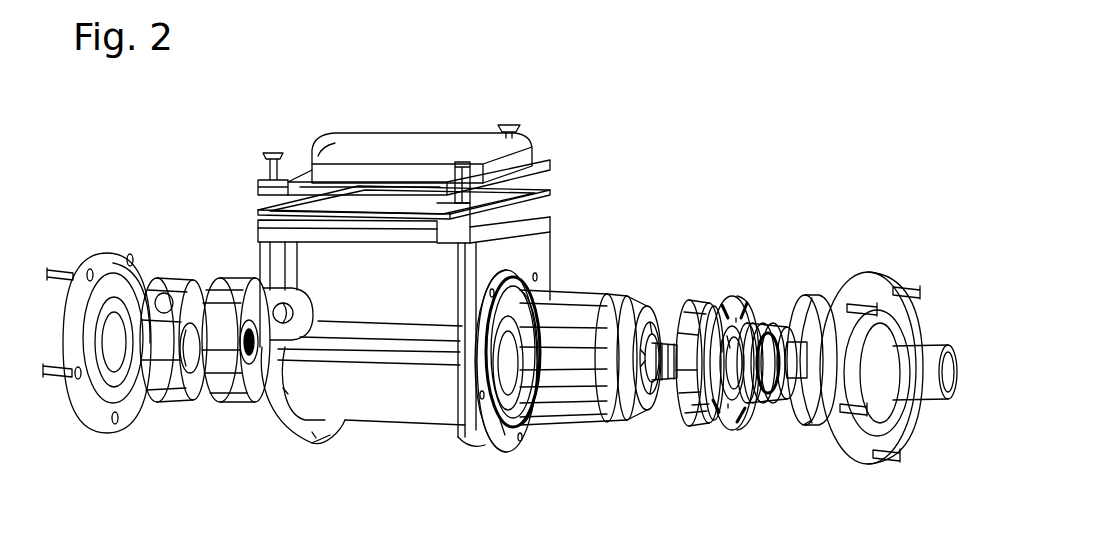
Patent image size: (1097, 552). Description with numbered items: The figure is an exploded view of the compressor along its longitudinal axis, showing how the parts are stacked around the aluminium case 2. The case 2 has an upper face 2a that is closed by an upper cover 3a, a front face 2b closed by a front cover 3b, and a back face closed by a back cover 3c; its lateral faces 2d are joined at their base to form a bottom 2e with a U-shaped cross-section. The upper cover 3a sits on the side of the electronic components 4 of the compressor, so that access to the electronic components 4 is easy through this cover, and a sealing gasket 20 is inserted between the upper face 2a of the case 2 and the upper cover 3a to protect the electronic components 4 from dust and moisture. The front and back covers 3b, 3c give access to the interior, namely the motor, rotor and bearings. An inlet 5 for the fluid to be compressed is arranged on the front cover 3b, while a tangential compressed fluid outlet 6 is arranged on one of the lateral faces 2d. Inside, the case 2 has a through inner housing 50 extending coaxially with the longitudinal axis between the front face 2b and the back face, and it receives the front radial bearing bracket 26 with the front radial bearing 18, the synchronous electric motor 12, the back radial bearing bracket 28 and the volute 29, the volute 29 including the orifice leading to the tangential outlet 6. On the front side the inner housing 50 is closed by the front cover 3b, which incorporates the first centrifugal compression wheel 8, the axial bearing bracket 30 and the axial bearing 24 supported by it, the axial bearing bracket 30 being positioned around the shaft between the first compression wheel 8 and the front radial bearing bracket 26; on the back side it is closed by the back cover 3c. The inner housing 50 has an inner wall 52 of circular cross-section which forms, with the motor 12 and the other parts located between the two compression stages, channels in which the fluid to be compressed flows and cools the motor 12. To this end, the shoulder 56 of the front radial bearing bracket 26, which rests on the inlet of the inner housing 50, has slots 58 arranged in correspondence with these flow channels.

The case 2 is at (434, 336).
The upper face 2a is at (545, 215).
The front face 2b is at (542, 242).
The lateral faces 2d is at (375, 390).
The bottom 2e is at (442, 427).
The upper cover 3a is at (398, 142).
The front cover 3b is at (867, 453).
The back cover 3c is at (102, 413).
The electronic components 4 is at (239, 214).
The inlet 5 is at (947, 383).
The tangential compressed fluid outlet 6 is at (268, 387).
The first centrifugal compression wheel 8 is at (818, 310).
The synchronous electric motor 12 is at (603, 432).
The front radial bearing 18 is at (692, 300).
The sealing gasket 20 is at (546, 195).
The axial bearing 24 is at (772, 328).
The front radial bearing bracket 26 is at (697, 427).
The back radial bearing bracket 28 is at (222, 387).
The volute 29 is at (170, 387).
The axial bearing bracket 30 is at (810, 423).
The inner housing 50 is at (503, 312).
The inner wall 52 is at (511, 413).
The shoulder 56 is at (742, 300).
The slots 58 is at (743, 430).